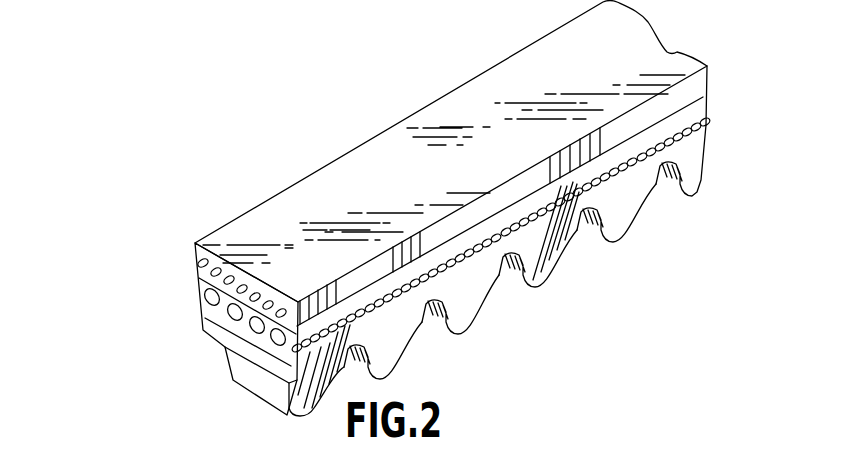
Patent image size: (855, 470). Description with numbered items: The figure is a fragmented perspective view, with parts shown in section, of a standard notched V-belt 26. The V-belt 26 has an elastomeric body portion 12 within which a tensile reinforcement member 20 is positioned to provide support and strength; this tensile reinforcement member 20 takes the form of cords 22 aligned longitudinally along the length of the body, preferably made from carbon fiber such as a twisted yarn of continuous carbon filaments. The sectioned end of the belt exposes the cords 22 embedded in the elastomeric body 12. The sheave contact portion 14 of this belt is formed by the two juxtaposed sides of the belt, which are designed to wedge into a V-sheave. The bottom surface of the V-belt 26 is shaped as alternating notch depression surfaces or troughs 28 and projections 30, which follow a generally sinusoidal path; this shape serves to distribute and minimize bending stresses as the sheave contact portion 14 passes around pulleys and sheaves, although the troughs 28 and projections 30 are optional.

The elastomeric body portion 12 is at (447, 168).
The sheave contact portion 14 is at (463, 306).
The tensile reinforcement member 20 is at (192, 288).
The cords 22 is at (217, 328).
The notched V-belt 26 is at (315, 155).
The notch depression surfaces or troughs 28 is at (582, 222).
The projections 30 is at (623, 212).